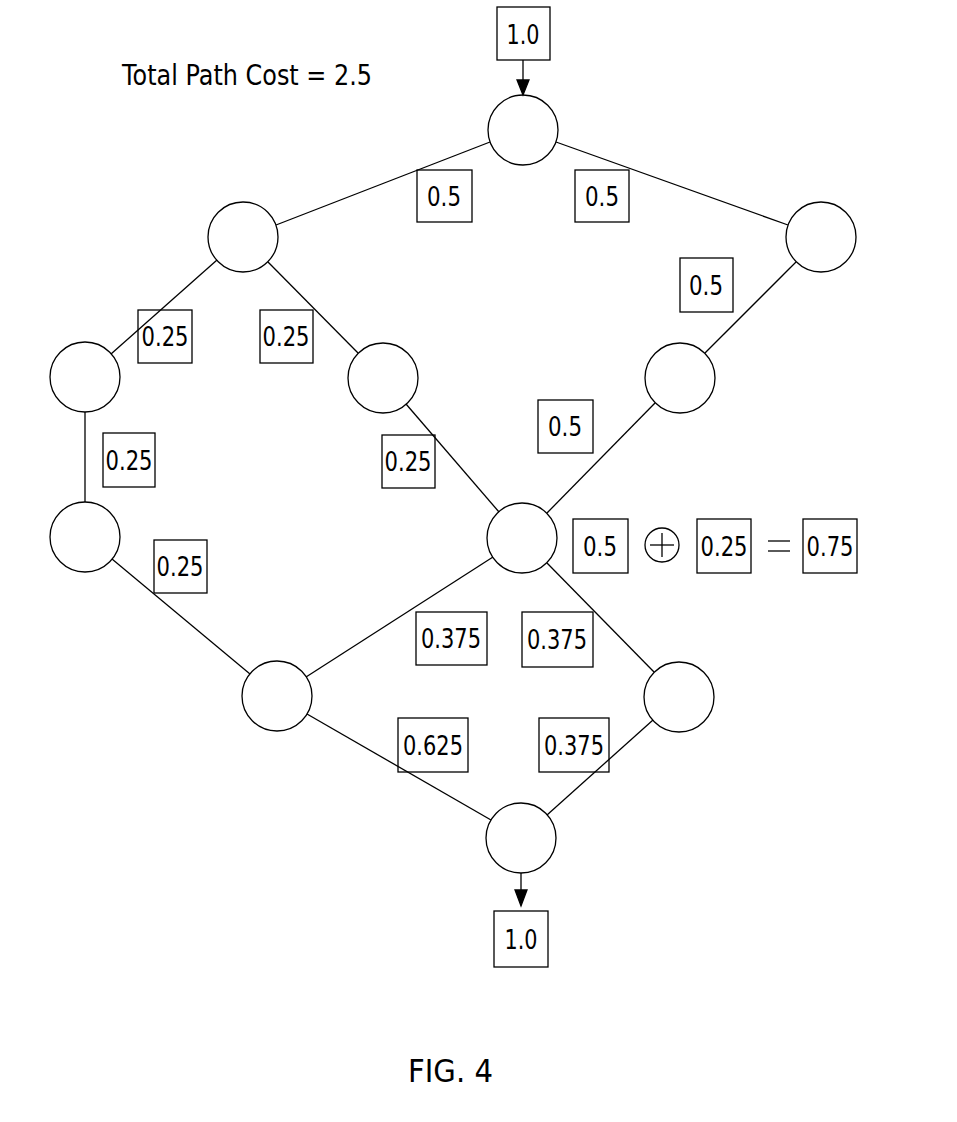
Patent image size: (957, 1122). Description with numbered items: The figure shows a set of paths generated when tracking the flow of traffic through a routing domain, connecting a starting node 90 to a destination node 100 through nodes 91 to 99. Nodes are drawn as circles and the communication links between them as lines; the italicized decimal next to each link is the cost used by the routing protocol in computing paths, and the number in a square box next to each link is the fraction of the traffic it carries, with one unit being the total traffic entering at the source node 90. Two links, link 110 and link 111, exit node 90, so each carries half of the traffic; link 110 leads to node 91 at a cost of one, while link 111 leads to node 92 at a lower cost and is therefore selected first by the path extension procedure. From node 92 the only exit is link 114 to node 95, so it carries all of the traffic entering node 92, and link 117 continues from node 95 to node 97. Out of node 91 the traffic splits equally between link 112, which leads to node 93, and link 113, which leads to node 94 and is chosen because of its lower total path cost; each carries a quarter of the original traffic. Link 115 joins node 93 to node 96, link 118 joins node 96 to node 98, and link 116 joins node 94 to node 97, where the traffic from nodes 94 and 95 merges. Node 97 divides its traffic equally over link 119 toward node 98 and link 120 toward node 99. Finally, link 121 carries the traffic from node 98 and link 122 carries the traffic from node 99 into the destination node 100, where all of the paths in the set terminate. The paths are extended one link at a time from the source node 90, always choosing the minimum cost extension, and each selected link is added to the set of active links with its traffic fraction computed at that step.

The starting node 90 is at (523, 130).
The node 91 is at (243, 237).
The node 92 is at (821, 237).
The node 93 is at (85, 377).
The node 94 is at (383, 378).
The node 95 is at (680, 378).
The node 96 is at (85, 537).
The node 97 is at (522, 538).
The node 98 is at (277, 696).
The node 99 is at (679, 697).
The destination node 100 is at (521, 838).
The link 110 is at (383, 170).
The link 111 is at (672, 170).
The link 112 is at (160, 296).
The link 113 is at (313, 295).
The link 114 is at (766, 307).
The link 115 is at (61, 457).
The link 116 is at (452, 449).
The link 117 is at (617, 458).
The link 118 is at (167, 616).
The link 119 is at (399, 617).
The link 120 is at (588, 617).
The link 121 is at (384, 767).
The link 122 is at (616, 767).